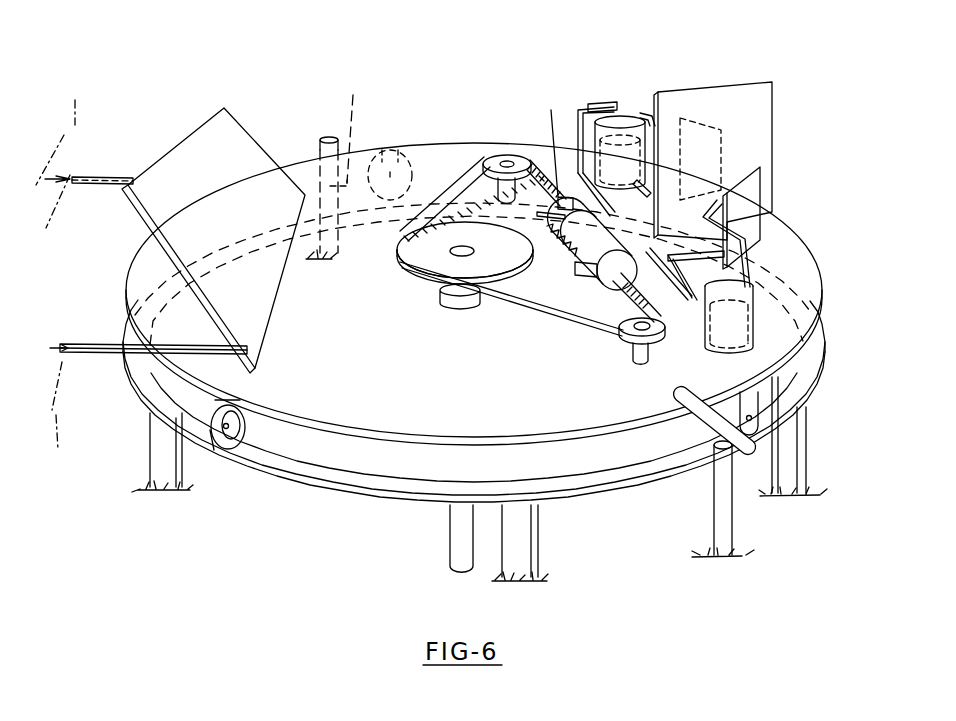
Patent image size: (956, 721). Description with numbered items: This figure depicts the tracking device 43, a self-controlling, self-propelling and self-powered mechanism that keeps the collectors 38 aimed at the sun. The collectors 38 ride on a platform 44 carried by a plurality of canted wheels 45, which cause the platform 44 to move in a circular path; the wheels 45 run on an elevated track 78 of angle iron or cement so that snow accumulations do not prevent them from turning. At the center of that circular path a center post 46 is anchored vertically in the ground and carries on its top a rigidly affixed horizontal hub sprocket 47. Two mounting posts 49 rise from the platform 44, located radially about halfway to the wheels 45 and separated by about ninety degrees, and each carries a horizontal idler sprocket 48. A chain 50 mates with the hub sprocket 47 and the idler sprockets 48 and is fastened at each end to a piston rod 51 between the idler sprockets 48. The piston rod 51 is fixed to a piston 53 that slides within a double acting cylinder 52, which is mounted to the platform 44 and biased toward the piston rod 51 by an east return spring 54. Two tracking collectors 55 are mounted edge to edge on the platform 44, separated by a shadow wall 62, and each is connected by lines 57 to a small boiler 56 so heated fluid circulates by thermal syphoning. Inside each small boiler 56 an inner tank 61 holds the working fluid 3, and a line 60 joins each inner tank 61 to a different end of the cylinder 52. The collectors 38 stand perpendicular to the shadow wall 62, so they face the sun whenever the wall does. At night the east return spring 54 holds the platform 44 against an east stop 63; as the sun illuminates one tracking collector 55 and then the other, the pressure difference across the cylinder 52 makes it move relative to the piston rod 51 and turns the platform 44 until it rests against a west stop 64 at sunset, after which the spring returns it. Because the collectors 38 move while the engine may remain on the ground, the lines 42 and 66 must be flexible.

The working fluid 3 is at (604, 104).
The collectors 38 is at (237, 143).
The line 42 is at (115, 340).
The tracking device 43 is at (380, 398).
The platform 44 is at (316, 178).
The wheels 45 is at (388, 150).
The center post 46 is at (445, 296).
The hub sprocket 47 is at (420, 258).
The idler sprocket 48 is at (505, 150).
The mounting posts 49 is at (498, 188).
The chain 50 is at (450, 202).
The piston rod 51 is at (551, 110).
The double acting cylinder 52 is at (612, 290).
The piston 53 is at (583, 280).
The east return spring 54 is at (565, 250).
The tracking collectors 55 is at (712, 150).
The small boilers 56 is at (600, 138).
The lines 57 is at (665, 118).
The line 60 is at (590, 108).
The inner tank 61 is at (614, 162).
The shadow wall 62 is at (752, 86).
The east stop 63 is at (360, 128).
The west stop 64 is at (700, 478).
The line 66 is at (110, 175).
The track 78 is at (795, 378).